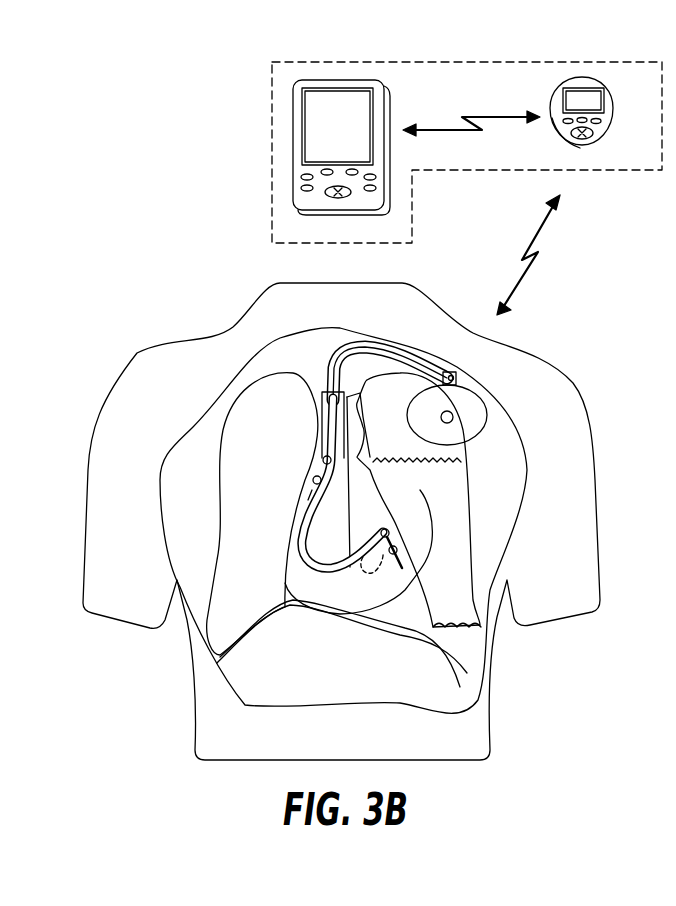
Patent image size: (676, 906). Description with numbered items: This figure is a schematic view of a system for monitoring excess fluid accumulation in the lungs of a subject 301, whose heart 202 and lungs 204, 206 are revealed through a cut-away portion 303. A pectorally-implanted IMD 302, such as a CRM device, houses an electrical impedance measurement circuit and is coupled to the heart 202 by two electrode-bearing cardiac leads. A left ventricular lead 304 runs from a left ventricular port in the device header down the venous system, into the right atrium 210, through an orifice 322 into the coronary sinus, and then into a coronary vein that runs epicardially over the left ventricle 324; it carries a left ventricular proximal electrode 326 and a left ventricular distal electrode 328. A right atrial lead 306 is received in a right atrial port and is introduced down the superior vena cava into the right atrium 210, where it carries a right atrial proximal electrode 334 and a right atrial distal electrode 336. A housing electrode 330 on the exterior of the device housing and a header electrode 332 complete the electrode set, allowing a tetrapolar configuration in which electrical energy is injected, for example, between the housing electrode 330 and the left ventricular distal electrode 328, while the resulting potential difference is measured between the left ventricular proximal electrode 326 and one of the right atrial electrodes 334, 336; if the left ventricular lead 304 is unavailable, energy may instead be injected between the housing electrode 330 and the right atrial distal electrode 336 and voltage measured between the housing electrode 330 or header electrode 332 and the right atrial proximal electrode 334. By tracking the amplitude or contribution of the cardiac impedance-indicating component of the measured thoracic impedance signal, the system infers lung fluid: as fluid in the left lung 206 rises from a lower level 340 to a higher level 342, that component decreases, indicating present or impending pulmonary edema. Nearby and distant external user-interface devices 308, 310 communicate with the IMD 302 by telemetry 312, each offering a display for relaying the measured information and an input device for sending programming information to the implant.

The subject 301 is at (443, 760).
The implantable medical device 302 is at (487, 403).
The cut-away portion 303 is at (337, 703).
The left ventricular lead 304 is at (375, 352).
The right atrial lead 306 is at (365, 463).
The nearby external user-interface device 308 is at (605, 94).
The distant external user-interface device 310 is at (362, 133).
The telemetry 312 is at (500, 113).
The orifice 322 is at (363, 557).
The left ventricle 324 is at (405, 588).
The left ventricular proximal electrode 326 is at (391, 530).
The left ventricular distal electrode 328 is at (400, 548).
The housing electrode 330 is at (450, 420).
The header electrode 332 is at (481, 368).
The right atrial proximal electrode 334 is at (322, 457).
The right atrial distal electrode 336 is at (312, 477).
The lower level 340 is at (467, 633).
The higher level 342 is at (452, 465).
The heart 202 is at (322, 613).
The lung 204 is at (240, 490).
The left lung 206 is at (445, 520).
The right atrium 210 is at (338, 532).